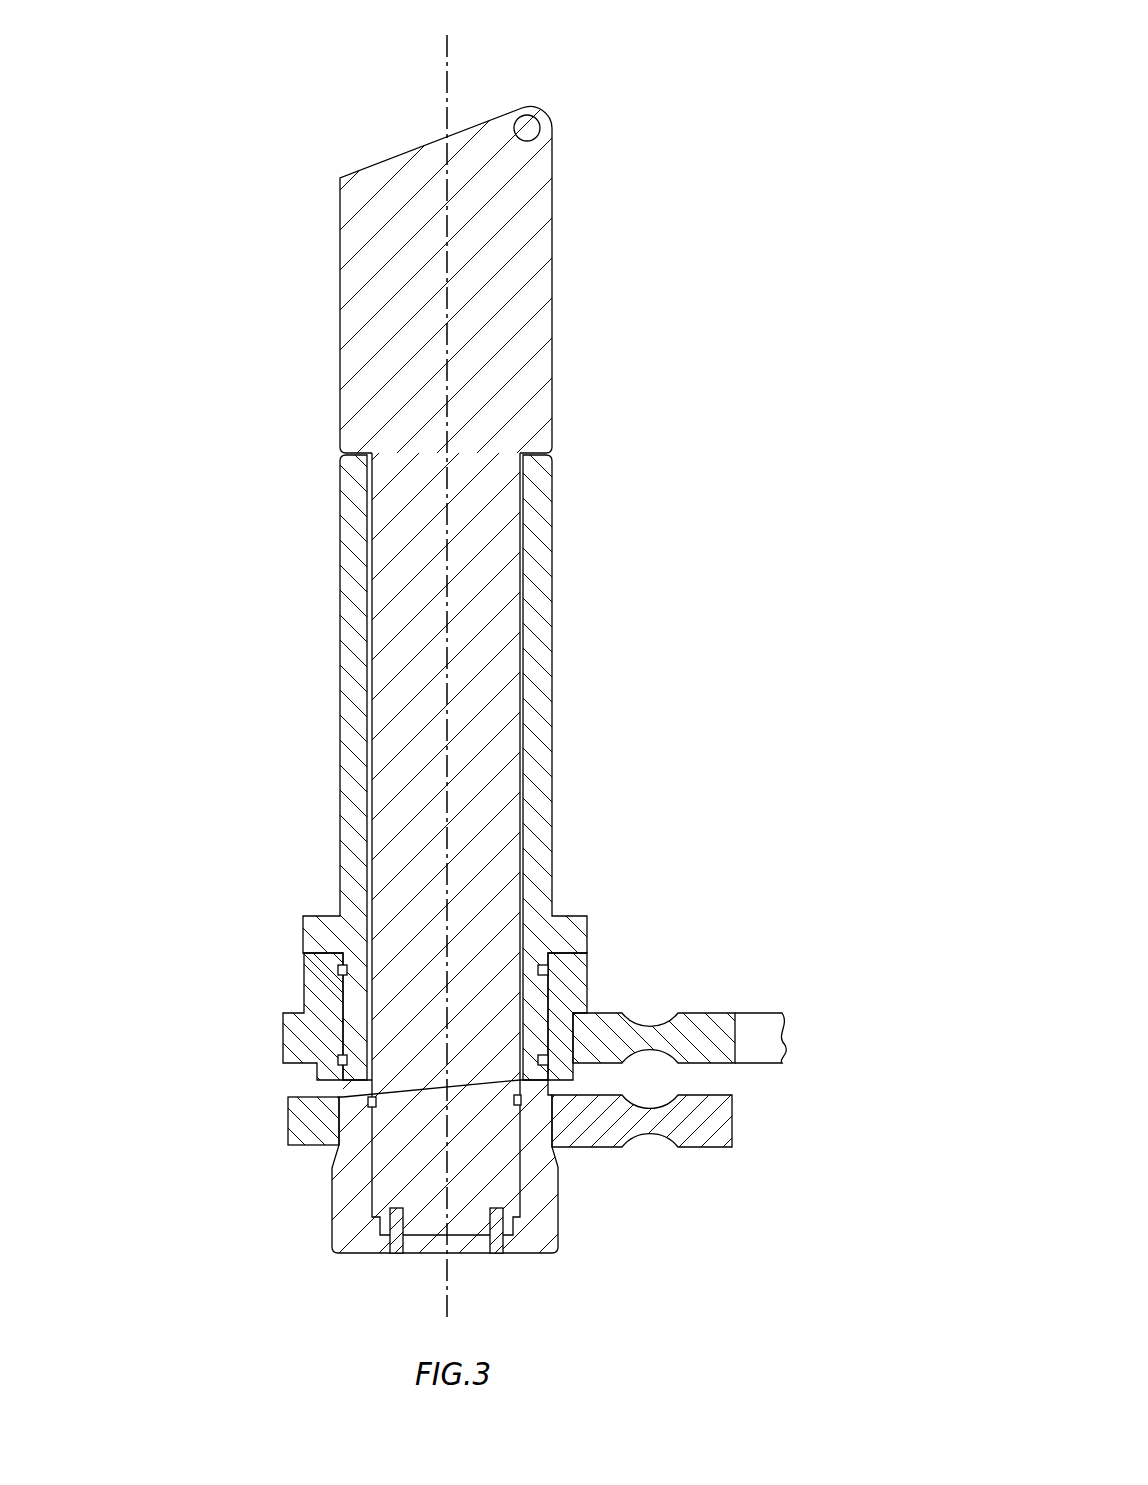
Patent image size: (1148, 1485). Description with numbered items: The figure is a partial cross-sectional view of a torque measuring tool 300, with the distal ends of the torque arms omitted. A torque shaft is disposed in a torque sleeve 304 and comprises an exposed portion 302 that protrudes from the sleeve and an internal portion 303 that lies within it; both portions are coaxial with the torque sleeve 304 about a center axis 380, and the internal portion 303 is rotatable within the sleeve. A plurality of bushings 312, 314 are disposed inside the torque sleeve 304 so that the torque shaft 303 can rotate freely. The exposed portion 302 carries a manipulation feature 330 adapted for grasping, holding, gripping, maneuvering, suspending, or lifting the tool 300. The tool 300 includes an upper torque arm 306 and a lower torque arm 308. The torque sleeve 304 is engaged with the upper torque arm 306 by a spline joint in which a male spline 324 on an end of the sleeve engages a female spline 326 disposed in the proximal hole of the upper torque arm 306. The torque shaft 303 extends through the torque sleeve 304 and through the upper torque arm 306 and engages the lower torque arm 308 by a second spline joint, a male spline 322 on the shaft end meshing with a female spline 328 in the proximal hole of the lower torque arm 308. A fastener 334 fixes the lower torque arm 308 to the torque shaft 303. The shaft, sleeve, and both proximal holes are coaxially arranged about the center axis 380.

The torque measuring tool 300 is at (772, 84).
The torque shaft exposed portion 302 is at (485, 415).
The torque shaft internal portion 303 is at (400, 622).
The torque sleeve 304 is at (535, 585).
The upper torque arm 306 is at (697, 1013).
The lower torque arm 308 is at (697, 1147).
The bushing 312 is at (372, 487).
The bushing 314 is at (366, 1013).
The male spline 322 is at (527, 1178).
The male spline 324 is at (553, 1003).
The female spline 326 is at (553, 1003).
The female spline 328 is at (527, 1178).
The manipulation feature 330 is at (385, 160).
The fastener 334 is at (390, 1256).
The center axis 380 is at (447, 220).